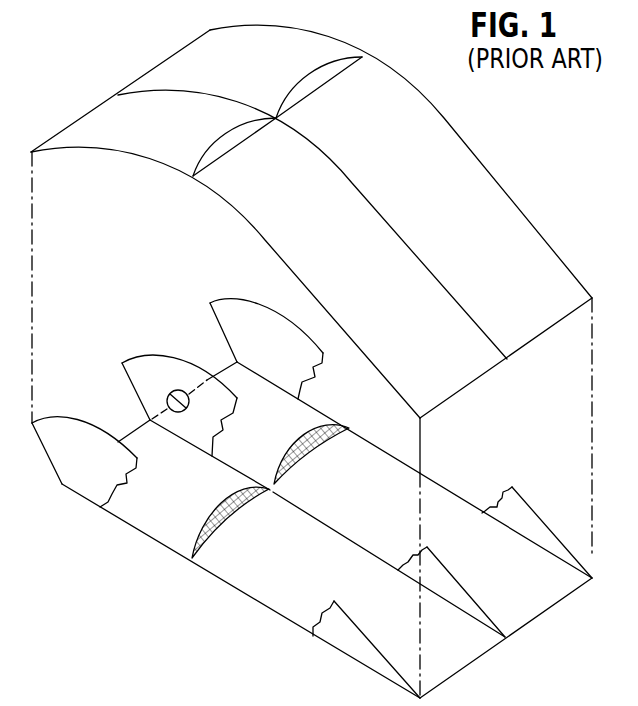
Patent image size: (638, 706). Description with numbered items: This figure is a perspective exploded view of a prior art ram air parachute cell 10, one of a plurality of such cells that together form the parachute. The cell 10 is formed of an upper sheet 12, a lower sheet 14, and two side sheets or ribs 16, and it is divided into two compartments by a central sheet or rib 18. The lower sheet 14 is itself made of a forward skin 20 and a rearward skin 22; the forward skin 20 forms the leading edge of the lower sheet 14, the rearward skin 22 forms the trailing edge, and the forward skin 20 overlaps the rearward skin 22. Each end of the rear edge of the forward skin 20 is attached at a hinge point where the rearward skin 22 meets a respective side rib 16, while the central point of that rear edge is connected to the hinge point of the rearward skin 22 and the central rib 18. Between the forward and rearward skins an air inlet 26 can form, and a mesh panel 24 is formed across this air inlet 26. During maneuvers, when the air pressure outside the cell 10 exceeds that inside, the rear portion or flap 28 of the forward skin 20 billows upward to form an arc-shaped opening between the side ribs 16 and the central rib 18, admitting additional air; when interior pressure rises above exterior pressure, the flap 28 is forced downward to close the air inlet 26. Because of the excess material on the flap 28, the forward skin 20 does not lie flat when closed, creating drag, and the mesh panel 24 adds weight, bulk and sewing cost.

The parachute cell 10 is at (131, 288).
The upper sheet 12 is at (470, 183).
The lower sheet 14 is at (304, 612).
The side sheets or ribs 16 is at (530, 523).
The central sheet or rib 18 is at (460, 595).
The forward skin 20 is at (153, 513).
The rearward skin 22 is at (257, 573).
The mesh panel 24 is at (312, 453).
The air inlet 26 is at (232, 510).
The flap 28 is at (308, 417).